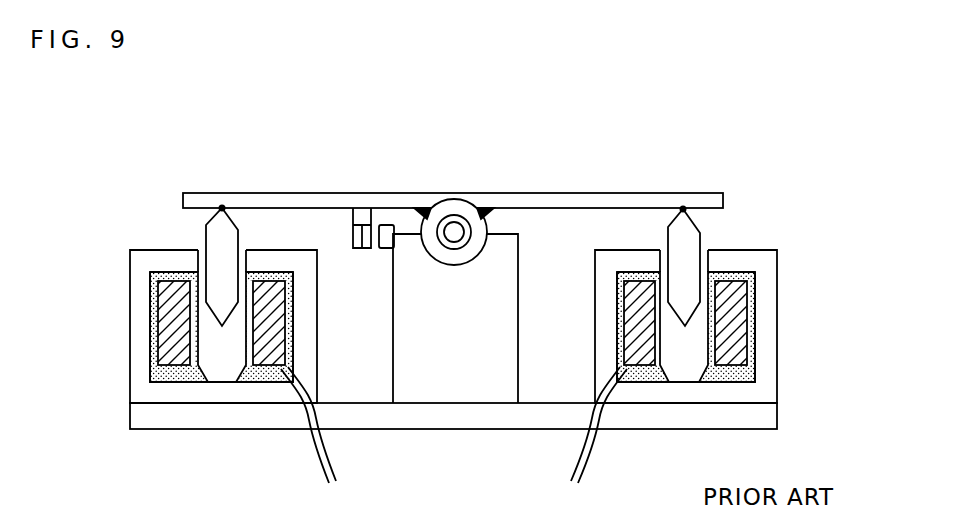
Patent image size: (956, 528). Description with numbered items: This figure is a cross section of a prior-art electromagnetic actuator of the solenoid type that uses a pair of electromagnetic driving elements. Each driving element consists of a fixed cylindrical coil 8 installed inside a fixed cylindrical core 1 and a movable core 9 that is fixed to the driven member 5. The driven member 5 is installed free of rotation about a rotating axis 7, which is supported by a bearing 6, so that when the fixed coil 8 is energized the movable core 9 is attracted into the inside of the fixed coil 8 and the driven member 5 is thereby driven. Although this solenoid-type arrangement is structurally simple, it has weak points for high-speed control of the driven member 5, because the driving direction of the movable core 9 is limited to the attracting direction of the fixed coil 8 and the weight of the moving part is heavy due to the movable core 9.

The cylindrical core 1 is at (132, 293).
The driven member 5 is at (602, 193).
The bearing 6 is at (470, 218).
The rotating axis 7 is at (455, 230).
The fixed coil 8 is at (167, 333).
The movable core 9 is at (207, 232).